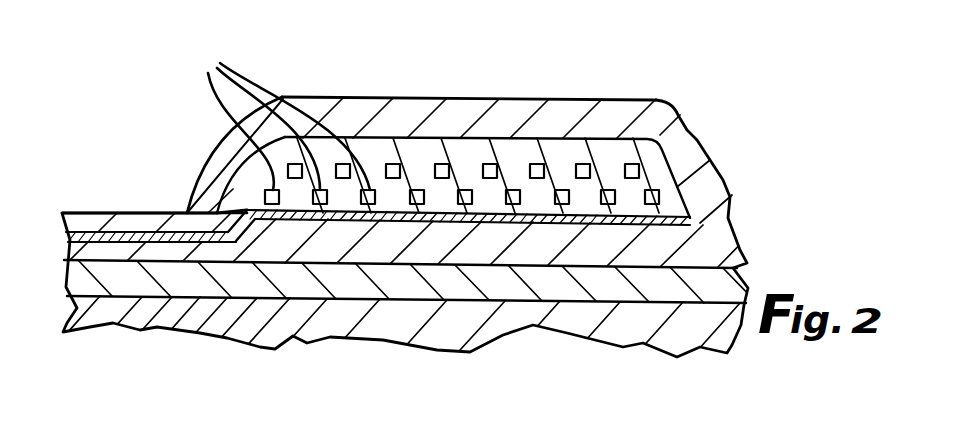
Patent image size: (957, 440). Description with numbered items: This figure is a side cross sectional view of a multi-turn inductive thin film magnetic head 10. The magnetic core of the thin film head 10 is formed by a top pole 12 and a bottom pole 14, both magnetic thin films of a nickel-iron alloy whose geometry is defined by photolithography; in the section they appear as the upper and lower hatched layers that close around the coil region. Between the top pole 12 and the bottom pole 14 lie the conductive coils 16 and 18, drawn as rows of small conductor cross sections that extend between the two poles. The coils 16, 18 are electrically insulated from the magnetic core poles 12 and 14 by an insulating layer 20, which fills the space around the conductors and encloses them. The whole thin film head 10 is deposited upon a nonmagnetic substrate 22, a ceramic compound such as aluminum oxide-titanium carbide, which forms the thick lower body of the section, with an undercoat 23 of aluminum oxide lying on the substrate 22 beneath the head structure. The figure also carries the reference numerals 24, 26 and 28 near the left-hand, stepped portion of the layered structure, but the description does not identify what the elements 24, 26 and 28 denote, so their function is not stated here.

The thin film head 10 is at (656, 80).
The top pole 12 is at (437, 136).
The bottom pole 14 is at (627, 248).
The conductive coil 16 is at (583, 164).
The conductive coil 18 is at (275, 108).
The insulating layer 20 is at (670, 183).
The nonmagnetic substrate 22 is at (397, 310).
The undercoat 23 is at (558, 285).
The contact region 24 is at (171, 223).
The conductive strip 26 is at (112, 247).
The insulating film 28 is at (85, 211).